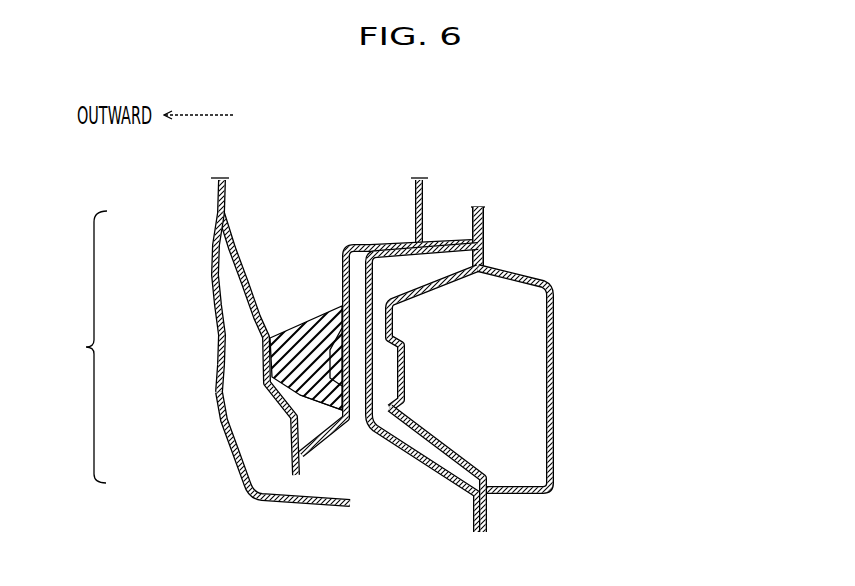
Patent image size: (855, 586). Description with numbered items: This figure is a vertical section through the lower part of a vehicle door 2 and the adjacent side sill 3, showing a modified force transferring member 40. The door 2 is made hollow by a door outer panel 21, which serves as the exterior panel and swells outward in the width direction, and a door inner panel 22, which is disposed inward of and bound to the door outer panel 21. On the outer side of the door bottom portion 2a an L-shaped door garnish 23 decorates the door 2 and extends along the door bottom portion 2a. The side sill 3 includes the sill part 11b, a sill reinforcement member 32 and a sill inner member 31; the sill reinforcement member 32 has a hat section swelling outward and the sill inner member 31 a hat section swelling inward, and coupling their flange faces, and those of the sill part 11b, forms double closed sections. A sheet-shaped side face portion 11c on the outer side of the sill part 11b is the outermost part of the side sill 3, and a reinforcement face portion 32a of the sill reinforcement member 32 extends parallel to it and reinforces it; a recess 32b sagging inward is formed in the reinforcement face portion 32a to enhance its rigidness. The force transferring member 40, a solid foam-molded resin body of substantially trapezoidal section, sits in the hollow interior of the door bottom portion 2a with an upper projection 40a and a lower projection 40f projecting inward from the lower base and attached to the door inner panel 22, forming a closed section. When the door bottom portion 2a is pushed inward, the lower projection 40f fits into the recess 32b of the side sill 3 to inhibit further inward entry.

The door 2 is at (183, 197).
The door bottom portion 2a is at (80, 347).
The door outer panel 21 is at (215, 203).
The door inner panel 22 is at (430, 188).
The door garnish 23 is at (227, 453).
The side sill 3 is at (557, 241).
The sill part 11b is at (440, 240).
The side face portion 11c is at (357, 280).
The sill inner member 31 is at (557, 350).
The sill reinforcement member 32 is at (431, 291).
The reinforcement face portion 32a is at (377, 310).
The recess 32b is at (398, 370).
The force transferring member 40 is at (300, 320).
The upper projection 40a is at (339, 322).
The lower projection 40f is at (334, 390).